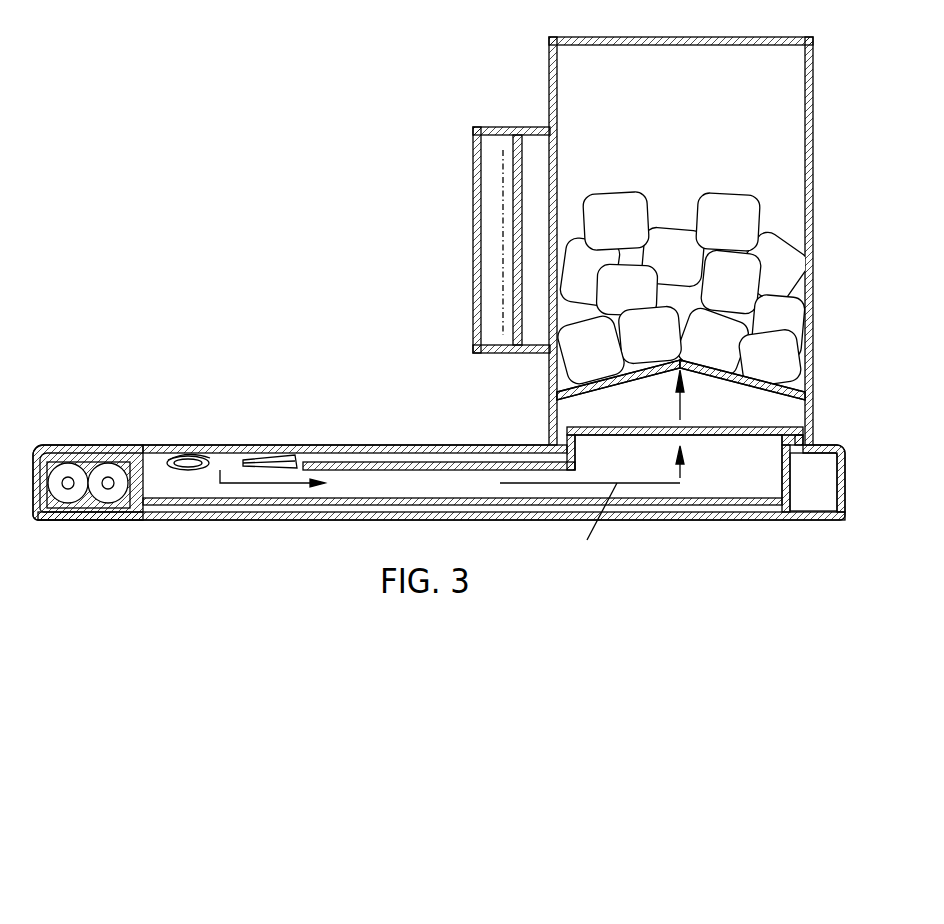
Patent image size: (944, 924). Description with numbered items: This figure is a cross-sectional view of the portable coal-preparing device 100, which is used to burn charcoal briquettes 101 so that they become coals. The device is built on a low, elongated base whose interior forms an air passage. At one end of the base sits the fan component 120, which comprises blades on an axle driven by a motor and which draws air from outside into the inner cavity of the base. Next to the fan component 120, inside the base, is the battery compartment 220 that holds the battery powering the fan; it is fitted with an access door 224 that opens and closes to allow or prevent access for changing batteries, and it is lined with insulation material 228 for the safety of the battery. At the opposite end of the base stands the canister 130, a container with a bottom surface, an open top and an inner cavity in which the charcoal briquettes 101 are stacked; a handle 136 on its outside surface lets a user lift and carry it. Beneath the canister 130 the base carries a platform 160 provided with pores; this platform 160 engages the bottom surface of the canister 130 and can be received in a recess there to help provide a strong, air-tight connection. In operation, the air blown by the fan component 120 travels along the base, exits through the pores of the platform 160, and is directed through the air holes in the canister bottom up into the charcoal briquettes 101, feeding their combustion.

The coal-preparing device 100 is at (565, 636).
The charcoal briquettes 101 is at (578, 264).
The fan component 120 is at (212, 472).
The canister 130 is at (549, 90).
The handle 136 is at (473, 220).
The platform 160 is at (705, 437).
The battery compartment 220 is at (112, 472).
The access door 224 is at (84, 512).
The insulation material 228 is at (86, 434).